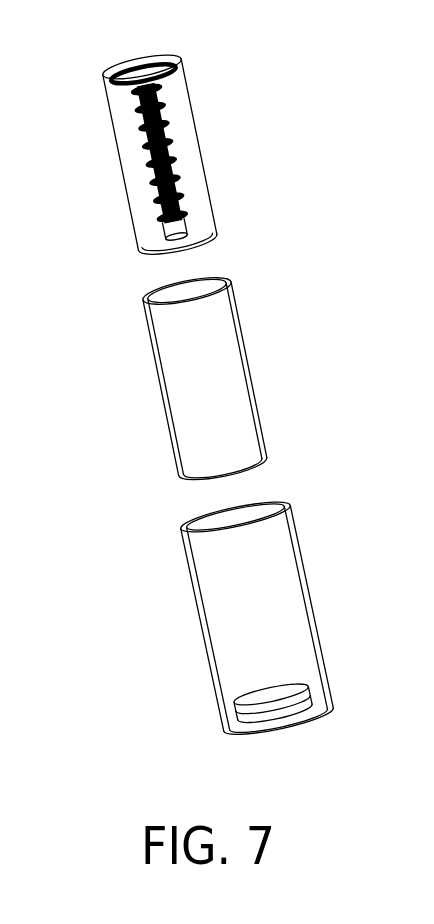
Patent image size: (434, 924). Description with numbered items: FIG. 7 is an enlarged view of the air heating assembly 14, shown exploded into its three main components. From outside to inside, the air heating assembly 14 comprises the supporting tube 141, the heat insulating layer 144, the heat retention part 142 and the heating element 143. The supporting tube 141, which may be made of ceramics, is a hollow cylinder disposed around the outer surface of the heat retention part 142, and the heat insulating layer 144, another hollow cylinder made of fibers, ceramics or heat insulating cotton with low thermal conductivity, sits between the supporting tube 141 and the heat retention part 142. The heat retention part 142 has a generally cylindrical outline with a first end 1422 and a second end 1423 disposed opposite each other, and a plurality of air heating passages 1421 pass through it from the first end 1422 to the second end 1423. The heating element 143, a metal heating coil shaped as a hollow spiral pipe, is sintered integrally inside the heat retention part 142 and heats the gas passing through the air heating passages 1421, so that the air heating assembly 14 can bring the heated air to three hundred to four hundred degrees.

The air heating assembly 14 is at (232, 41).
The supporting tube 141 is at (198, 640).
The heat retention part 142 is at (207, 172).
The heating element 143 is at (182, 217).
The heat insulating layer 144 is at (170, 452).
The air heating passage 1421 is at (163, 227).
The first end 1422 is at (136, 57).
The second end 1423 is at (212, 237).